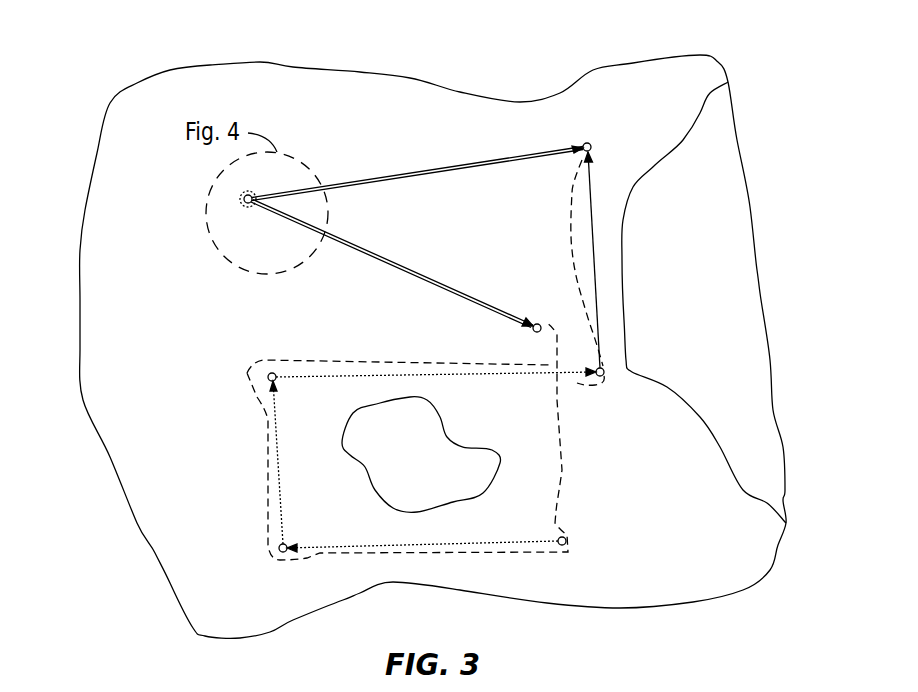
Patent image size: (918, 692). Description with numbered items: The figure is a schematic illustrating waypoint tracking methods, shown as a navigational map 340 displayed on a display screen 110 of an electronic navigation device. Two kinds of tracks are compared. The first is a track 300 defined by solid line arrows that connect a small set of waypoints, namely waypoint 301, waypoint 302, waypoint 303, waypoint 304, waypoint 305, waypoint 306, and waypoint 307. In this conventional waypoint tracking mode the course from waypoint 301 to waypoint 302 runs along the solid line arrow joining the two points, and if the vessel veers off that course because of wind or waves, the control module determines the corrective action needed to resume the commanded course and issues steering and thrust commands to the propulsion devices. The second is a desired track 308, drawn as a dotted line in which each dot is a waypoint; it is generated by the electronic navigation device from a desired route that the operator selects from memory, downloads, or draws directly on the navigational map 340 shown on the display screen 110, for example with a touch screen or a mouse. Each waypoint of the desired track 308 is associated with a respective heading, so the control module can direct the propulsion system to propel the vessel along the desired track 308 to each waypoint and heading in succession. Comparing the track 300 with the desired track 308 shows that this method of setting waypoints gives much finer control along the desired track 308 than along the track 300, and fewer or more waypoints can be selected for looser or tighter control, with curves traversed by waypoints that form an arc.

The display screen 110 is at (155, 557).
The track 300 is at (603, 270).
The waypoint 301 is at (567, 545).
The waypoint 302 is at (278, 552).
The waypoint 303 is at (267, 374).
The waypoint 304 is at (628, 366).
The waypoint 305 is at (591, 143).
The waypoint 306 is at (247, 205).
The waypoint 307 is at (536, 322).
The desired track 308 is at (377, 355).
The navigational map 340 is at (466, 115).